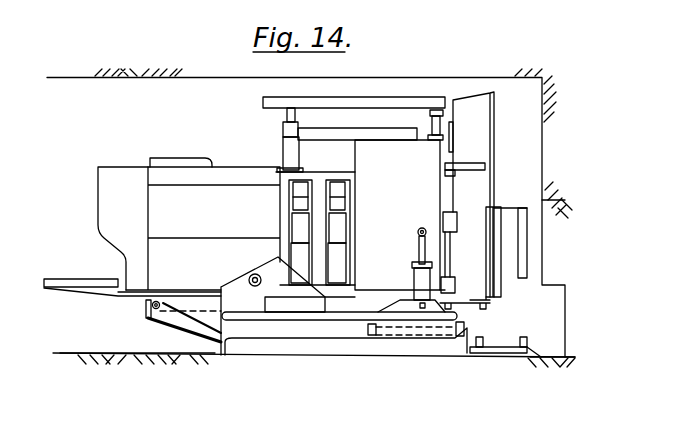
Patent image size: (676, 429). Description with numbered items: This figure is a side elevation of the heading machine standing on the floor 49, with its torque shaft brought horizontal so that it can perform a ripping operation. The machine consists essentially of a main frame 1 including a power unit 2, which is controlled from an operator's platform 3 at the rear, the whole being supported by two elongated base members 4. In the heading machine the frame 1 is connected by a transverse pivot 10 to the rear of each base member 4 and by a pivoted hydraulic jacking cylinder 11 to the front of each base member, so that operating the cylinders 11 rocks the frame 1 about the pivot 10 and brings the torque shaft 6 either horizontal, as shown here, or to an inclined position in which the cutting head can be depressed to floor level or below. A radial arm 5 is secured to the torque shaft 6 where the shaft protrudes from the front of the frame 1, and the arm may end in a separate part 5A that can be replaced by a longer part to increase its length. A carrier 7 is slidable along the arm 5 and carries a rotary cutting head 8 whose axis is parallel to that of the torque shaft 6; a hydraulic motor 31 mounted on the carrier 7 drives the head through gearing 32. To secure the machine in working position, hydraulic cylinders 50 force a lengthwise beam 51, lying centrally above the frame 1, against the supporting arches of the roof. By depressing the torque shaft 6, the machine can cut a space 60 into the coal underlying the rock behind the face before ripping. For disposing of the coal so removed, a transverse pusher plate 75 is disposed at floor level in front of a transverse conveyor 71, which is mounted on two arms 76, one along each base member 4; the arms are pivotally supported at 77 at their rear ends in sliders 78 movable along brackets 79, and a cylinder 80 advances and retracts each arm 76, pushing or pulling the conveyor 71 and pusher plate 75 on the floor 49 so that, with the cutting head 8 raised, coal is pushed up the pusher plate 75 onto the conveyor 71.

The main frame 1 is at (383, 224).
The power unit 2 is at (189, 224).
The operator's platform 3 is at (88, 279).
The base members 4 is at (226, 345).
The radial arm 5 is at (482, 200).
The separate part 5A is at (483, 147).
The torque shaft 6 is at (445, 265).
The carrier 7 is at (492, 283).
The rotary cutting head 8 is at (562, 204).
The transverse pivot 10 is at (256, 276).
The hydraulic jacking cylinder 11 is at (415, 281).
The hydraulic motor 31 is at (500, 220).
The gearing 32 is at (537, 217).
The supporting surface 49 is at (98, 353).
The hydraulic cylinders 50 is at (283, 134).
The lengthwise beam 51 is at (384, 101).
The space 60 is at (491, 153).
The transverse conveyor 71 is at (495, 347).
The transverse pusher plate 75 is at (527, 346).
The arms 76 is at (340, 330).
The pivot 77 is at (160, 313).
The sliders 78 is at (150, 305).
The brackets 79 is at (178, 326).
The cylinder 80 is at (425, 340).